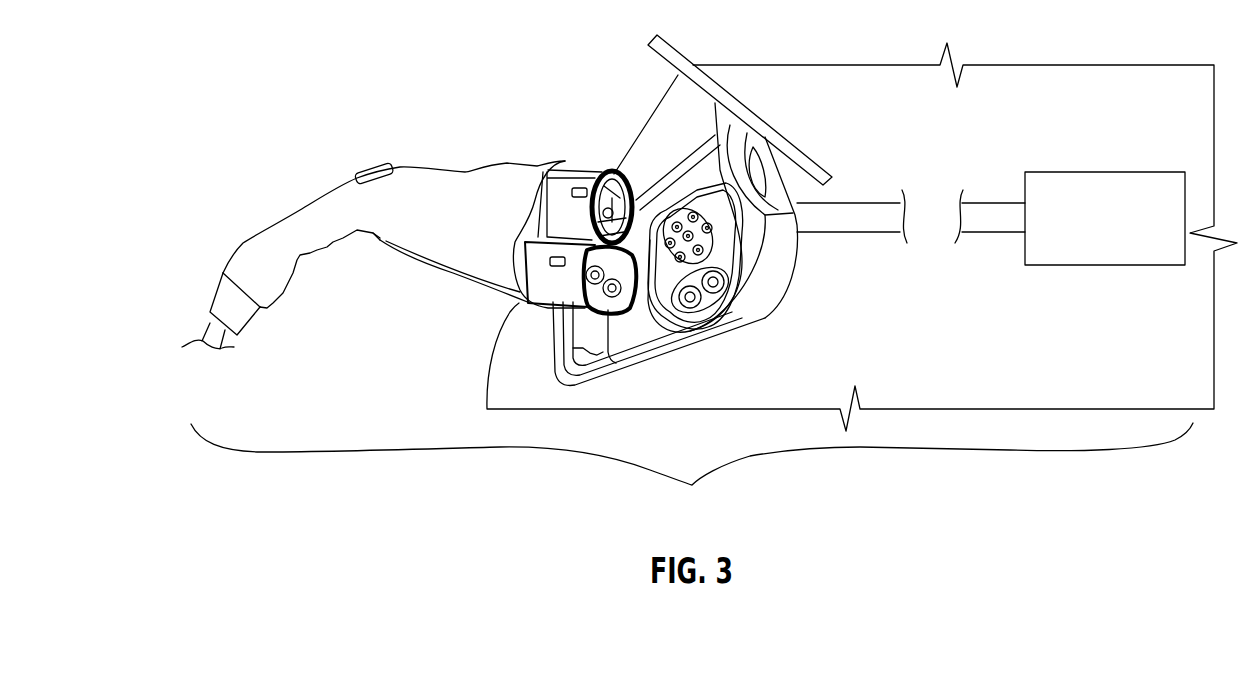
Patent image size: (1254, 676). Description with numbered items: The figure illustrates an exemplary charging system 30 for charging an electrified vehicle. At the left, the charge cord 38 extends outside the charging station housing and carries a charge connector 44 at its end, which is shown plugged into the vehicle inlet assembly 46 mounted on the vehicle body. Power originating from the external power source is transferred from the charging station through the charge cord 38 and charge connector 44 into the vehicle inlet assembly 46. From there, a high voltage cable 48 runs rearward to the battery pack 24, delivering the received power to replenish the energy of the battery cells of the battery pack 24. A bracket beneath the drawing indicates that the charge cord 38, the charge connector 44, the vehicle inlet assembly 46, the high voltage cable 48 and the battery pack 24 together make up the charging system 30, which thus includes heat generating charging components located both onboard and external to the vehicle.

The battery pack 24 is at (1113, 171).
The charging system 30 is at (692, 471).
The charge cord 38 is at (200, 340).
The charge connector 44 is at (460, 177).
The vehicle inlet assembly 46 is at (746, 295).
The high voltage cable 48 is at (862, 203).